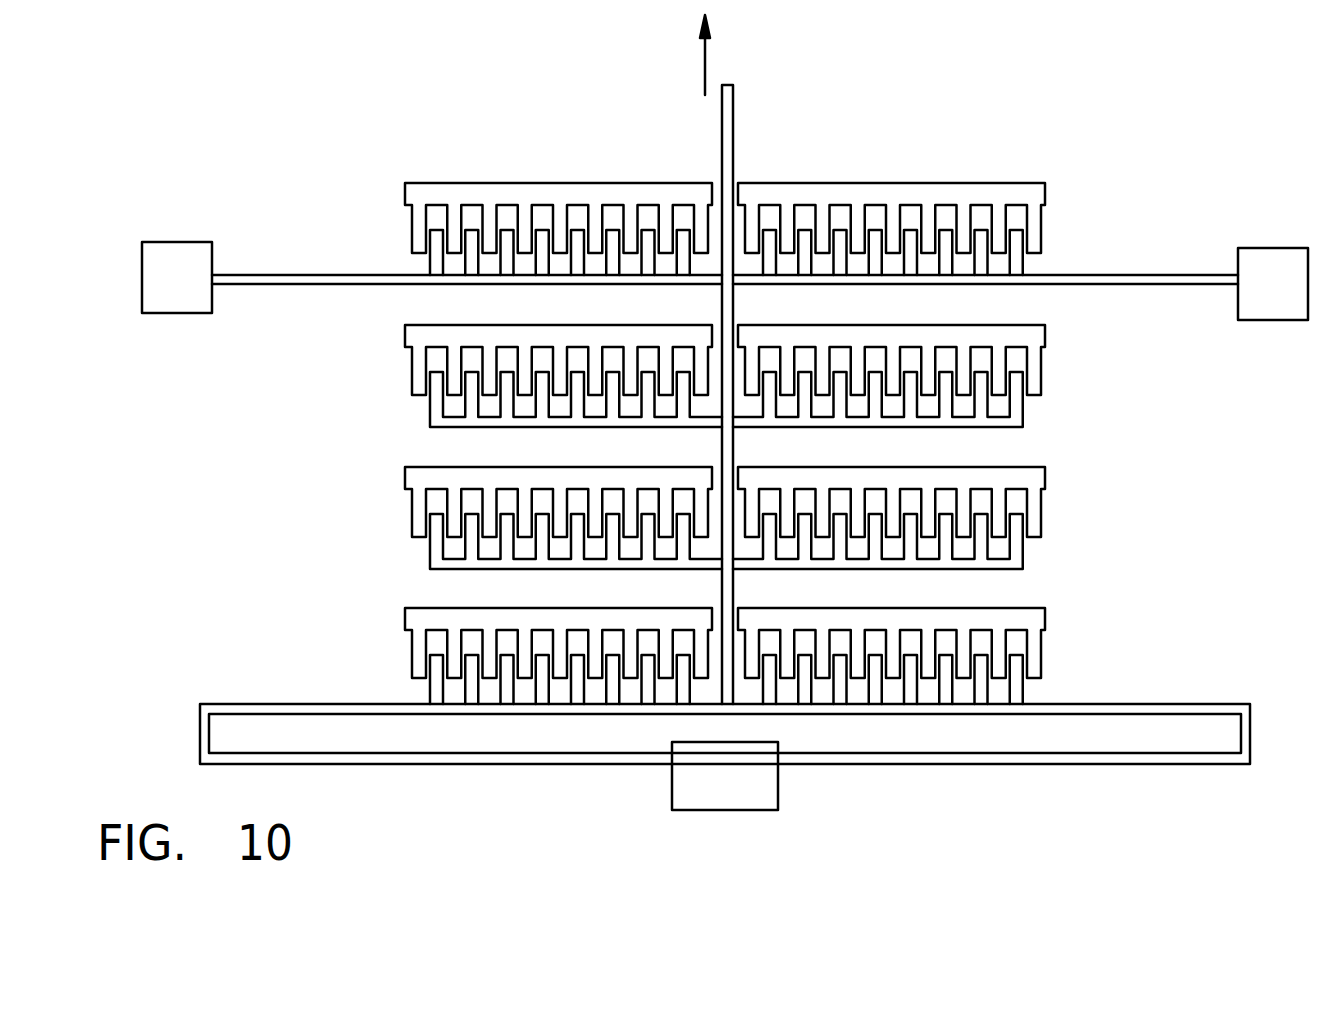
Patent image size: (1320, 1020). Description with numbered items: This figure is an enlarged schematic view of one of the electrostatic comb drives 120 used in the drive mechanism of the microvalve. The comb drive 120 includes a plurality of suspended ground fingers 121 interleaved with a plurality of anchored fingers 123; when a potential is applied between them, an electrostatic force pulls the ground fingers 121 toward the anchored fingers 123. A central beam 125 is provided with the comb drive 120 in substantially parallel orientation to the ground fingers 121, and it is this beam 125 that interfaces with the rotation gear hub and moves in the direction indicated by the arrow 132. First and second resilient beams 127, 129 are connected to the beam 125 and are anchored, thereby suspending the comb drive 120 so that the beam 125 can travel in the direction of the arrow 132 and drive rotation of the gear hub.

The comb drive 120 is at (1012, 85).
The suspended ground fingers 121 is at (1023, 269).
The anchored fingers 123 is at (1030, 184).
The beam 125 is at (734, 143).
The first resilient beam 127 is at (1148, 276).
The second resilient beam 129 is at (1130, 703).
The arrow 132 is at (705, 68).